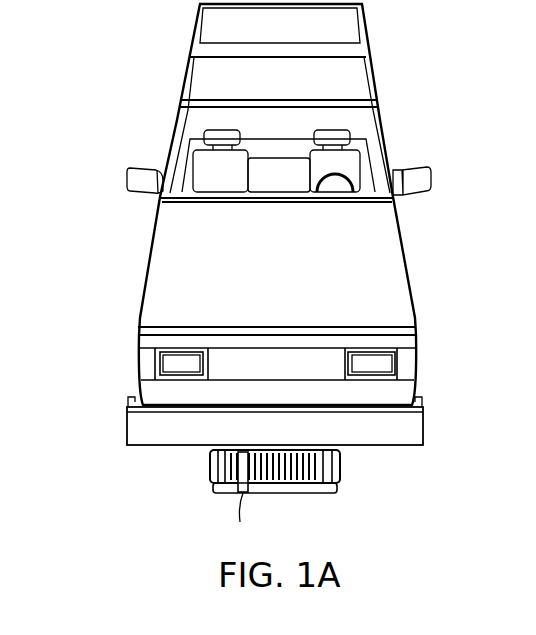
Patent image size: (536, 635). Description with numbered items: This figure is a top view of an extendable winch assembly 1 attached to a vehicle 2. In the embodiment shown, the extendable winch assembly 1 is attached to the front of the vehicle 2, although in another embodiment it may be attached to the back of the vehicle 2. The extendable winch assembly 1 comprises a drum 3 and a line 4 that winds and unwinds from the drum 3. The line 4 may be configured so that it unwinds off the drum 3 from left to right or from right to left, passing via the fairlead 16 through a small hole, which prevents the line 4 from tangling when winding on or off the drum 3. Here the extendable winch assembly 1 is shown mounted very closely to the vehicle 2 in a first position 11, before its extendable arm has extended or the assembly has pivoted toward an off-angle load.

The extendable winch assembly 1 is at (358, 512).
The vehicle 2 is at (105, 228).
The drum 3 is at (208, 467).
The line 4 is at (317, 465).
The first position 11 is at (177, 515).
The fairlead 16 is at (278, 492).